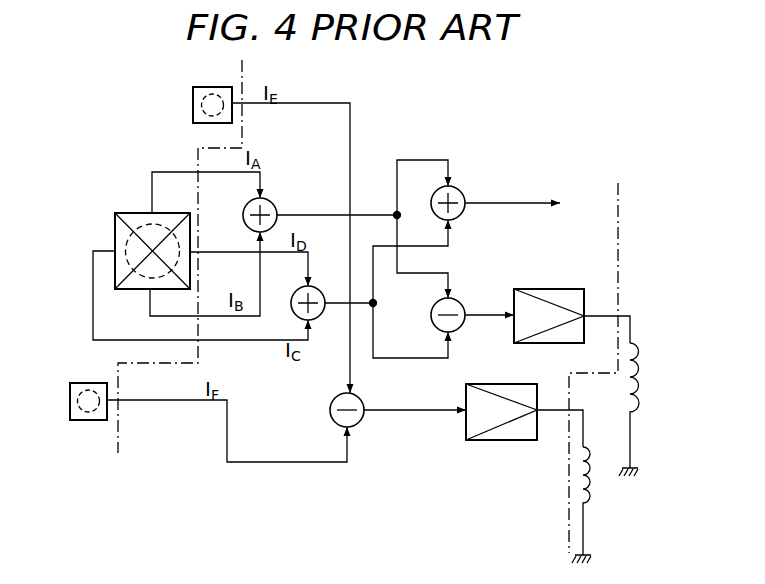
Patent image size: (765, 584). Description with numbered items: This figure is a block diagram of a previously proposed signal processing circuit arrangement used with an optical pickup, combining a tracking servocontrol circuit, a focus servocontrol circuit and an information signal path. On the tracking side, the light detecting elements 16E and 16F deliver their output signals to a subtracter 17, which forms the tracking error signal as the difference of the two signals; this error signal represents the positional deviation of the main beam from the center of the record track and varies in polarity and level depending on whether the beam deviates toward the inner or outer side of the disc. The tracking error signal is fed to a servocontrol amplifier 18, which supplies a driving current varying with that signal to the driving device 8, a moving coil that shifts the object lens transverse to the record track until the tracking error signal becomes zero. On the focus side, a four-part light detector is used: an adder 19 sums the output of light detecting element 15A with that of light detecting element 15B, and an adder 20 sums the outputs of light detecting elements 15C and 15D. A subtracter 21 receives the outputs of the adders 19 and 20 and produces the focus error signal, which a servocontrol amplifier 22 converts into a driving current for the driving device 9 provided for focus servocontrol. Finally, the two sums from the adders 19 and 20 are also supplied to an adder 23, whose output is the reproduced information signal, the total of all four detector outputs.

The driving device 8 is at (588, 484).
The driving device 9 is at (631, 393).
The light detecting element 15A is at (137, 212).
The light detecting element 15B is at (143, 289).
The light detecting element 15C is at (114, 241).
The light detecting element 15D is at (190, 238).
The light detecting element 16E is at (192, 96).
The light detecting element 16F is at (94, 383).
The subtracter 17 is at (358, 400).
The servocontrol amplifier 18 is at (500, 384).
The adder 19 is at (270, 201).
The adder 20 is at (313, 316).
The subtracter 21 is at (460, 302).
The servocontrol amplifier 22 is at (543, 289).
The adder 23 is at (463, 188).